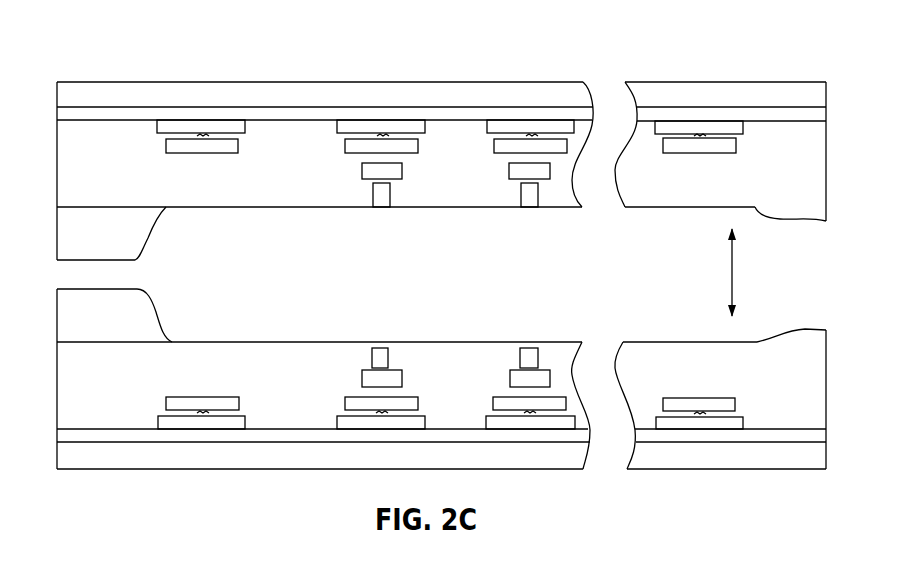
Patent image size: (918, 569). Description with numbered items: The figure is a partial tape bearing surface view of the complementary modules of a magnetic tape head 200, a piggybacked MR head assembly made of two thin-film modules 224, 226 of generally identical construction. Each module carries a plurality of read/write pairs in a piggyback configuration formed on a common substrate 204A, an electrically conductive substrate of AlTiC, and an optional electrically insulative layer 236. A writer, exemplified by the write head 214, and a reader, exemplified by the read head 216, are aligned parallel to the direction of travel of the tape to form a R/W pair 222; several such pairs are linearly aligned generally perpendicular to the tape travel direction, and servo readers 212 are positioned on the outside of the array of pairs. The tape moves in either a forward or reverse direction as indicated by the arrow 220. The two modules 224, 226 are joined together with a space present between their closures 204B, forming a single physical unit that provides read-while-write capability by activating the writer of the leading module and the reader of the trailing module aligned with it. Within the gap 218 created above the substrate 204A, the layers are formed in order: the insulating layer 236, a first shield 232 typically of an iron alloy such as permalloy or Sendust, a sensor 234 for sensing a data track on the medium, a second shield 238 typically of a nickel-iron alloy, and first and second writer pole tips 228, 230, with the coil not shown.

The magnetic tape head 200 is at (373, 68).
The common substrate 204A is at (183, 106).
The closure 204B is at (148, 238).
The servo reader 212 is at (243, 385).
The write head 214 is at (454, 380).
The read head 216 is at (470, 418).
The gap 218 is at (245, 207).
The arrow 220 is at (734, 281).
The R/W pair 222 is at (392, 322).
The thin-film module 224 is at (752, 82).
The thin-film module 226 is at (737, 469).
The first writer pole tip 228 is at (362, 380).
The second writer pole tip 230 is at (369, 353).
The first shield 232 is at (337, 420).
The sensor 234 is at (338, 406).
The electrically insulative layer 236 is at (816, 424).
The second shield 238 is at (342, 406).